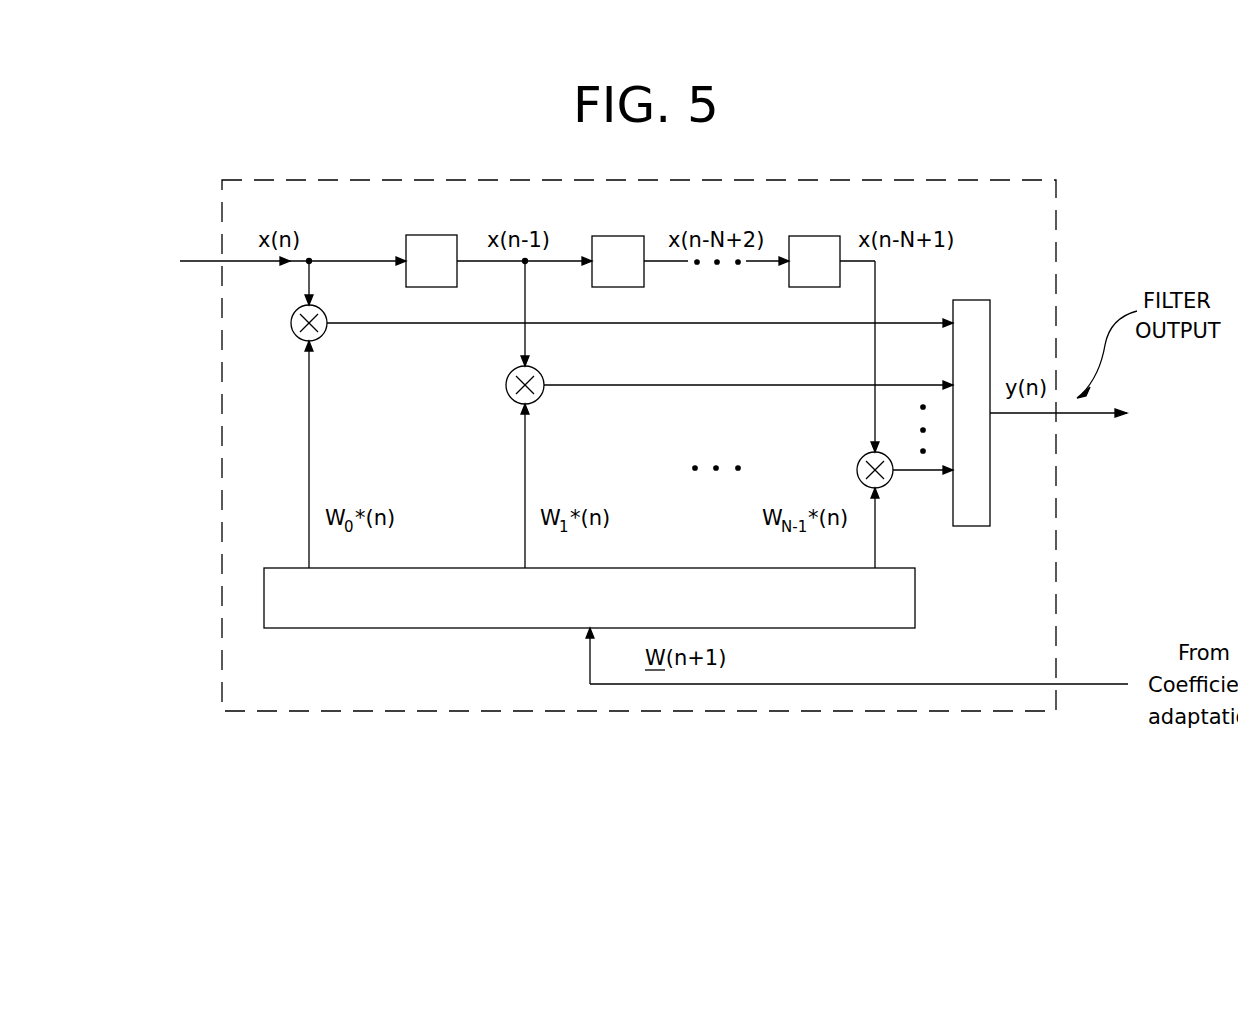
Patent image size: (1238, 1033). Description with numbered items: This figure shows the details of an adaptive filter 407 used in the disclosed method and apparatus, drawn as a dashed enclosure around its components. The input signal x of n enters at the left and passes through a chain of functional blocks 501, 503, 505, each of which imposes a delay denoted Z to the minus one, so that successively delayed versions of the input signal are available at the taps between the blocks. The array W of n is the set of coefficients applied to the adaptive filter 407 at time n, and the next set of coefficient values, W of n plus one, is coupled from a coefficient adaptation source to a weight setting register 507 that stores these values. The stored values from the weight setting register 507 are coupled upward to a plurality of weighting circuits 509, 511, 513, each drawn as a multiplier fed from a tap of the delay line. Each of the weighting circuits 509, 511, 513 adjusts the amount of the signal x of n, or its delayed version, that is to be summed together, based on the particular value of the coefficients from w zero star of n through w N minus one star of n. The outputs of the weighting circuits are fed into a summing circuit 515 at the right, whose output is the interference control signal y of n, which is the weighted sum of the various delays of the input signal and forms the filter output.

The adaptive filter 407 is at (299, 682).
The functional block 501 is at (432, 236).
The functional block 503 is at (604, 236).
The functional block 505 is at (803, 236).
The weight setting register 507 is at (917, 627).
The weighting circuit 509 is at (292, 326).
The weighting circuit 511 is at (506, 383).
The weighting circuit 513 is at (860, 460).
The summing circuit 515 is at (963, 300).